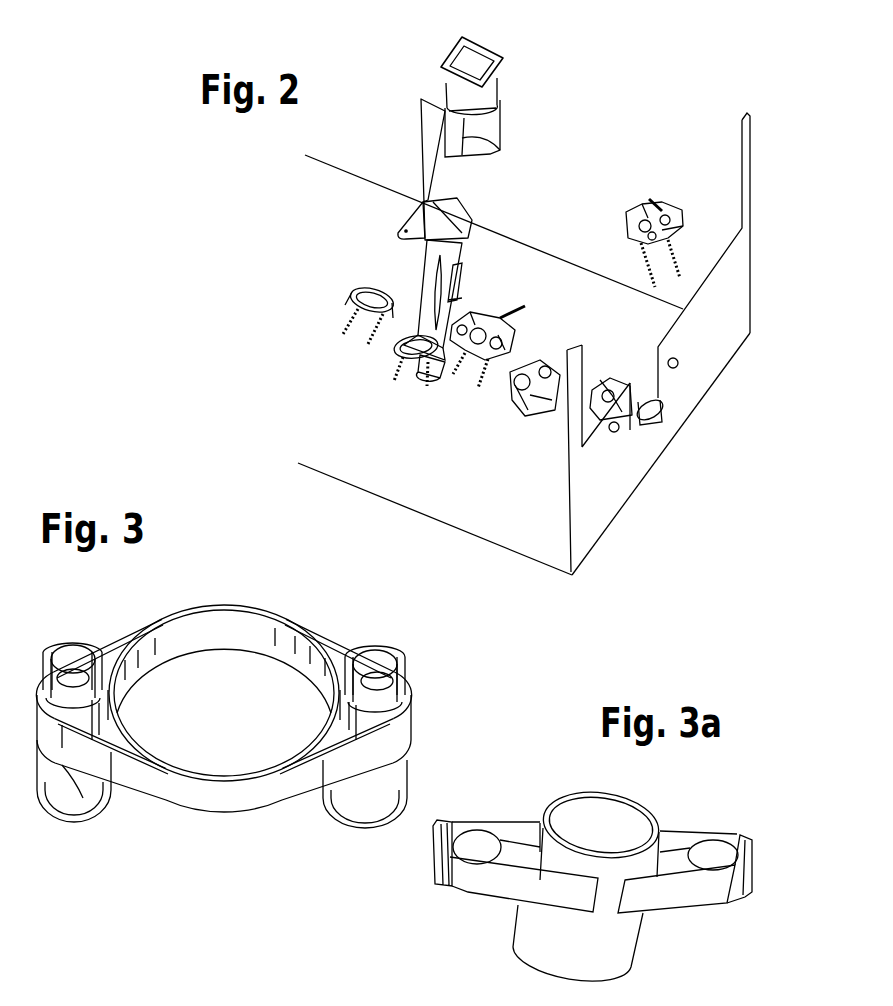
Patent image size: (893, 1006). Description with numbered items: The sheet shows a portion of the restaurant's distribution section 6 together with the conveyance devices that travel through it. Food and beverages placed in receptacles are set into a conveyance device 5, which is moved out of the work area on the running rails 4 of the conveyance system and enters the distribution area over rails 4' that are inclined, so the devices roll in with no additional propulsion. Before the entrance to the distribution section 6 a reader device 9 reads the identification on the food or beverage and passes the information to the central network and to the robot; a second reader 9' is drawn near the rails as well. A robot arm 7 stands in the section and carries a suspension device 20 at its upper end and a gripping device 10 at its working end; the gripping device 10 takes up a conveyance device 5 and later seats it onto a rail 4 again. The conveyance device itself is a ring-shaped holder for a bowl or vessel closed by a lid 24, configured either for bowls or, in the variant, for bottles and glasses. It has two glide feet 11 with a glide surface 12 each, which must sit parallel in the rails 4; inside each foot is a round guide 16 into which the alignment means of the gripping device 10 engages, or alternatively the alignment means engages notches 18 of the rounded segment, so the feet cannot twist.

In FIG. 2, the running rails 4 is at (499, 347).
In FIG. 2, the inclined rails 4' is at (628, 375).
In FIG. 2, the conveyance device 5 is at (375, 292).
In FIG. 3, the conveyance device 5 is at (440, 925).
In FIG. 2, the distribution section 6 is at (453, 495).
In FIG. 2, the robot arm 7 is at (463, 251).
In FIG. 2, the reader device 9 is at (692, 351).
In FIG. 2, the hole 9' is at (607, 458).
In FIG. 2, the gripping device 10 is at (484, 330).
In FIG. 3, the glide feet 11 is at (397, 763).
In FIG. 3, the glide surface 12 is at (55, 803).
In FIG. 3, the round guide 16 is at (378, 665).
In FIG. 3, the notches 18 is at (80, 650).
In FIG. 2, the suspension device 20 is at (503, 60).
In FIG. 3, the lid 24 is at (245, 609).